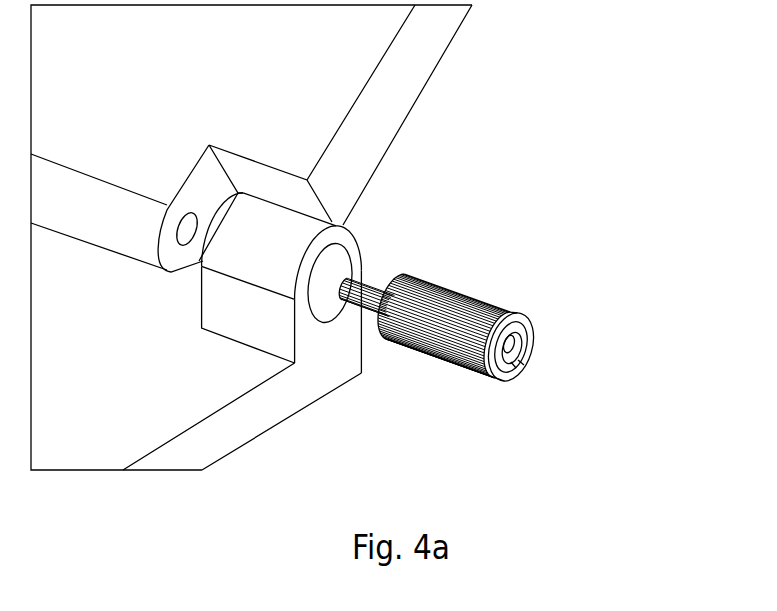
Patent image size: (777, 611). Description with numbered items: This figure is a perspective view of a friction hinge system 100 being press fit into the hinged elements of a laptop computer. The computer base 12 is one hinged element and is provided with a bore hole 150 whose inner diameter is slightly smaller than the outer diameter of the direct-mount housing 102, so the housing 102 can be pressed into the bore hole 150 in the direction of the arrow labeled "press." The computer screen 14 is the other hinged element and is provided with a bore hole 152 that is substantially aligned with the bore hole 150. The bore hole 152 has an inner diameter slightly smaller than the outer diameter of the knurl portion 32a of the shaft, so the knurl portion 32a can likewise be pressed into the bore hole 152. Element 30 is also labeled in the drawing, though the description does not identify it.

The computer base 12 is at (237, 427).
The computer screen 14 is at (408, 55).
The push button 30 is at (518, 380).
The knurl portion 32a is at (370, 308).
The friction hinge system 100 is at (521, 340).
The direct-mount housing 102 is at (481, 383).
The bore hole 150 is at (281, 259).
The bore hole 152 is at (182, 246).